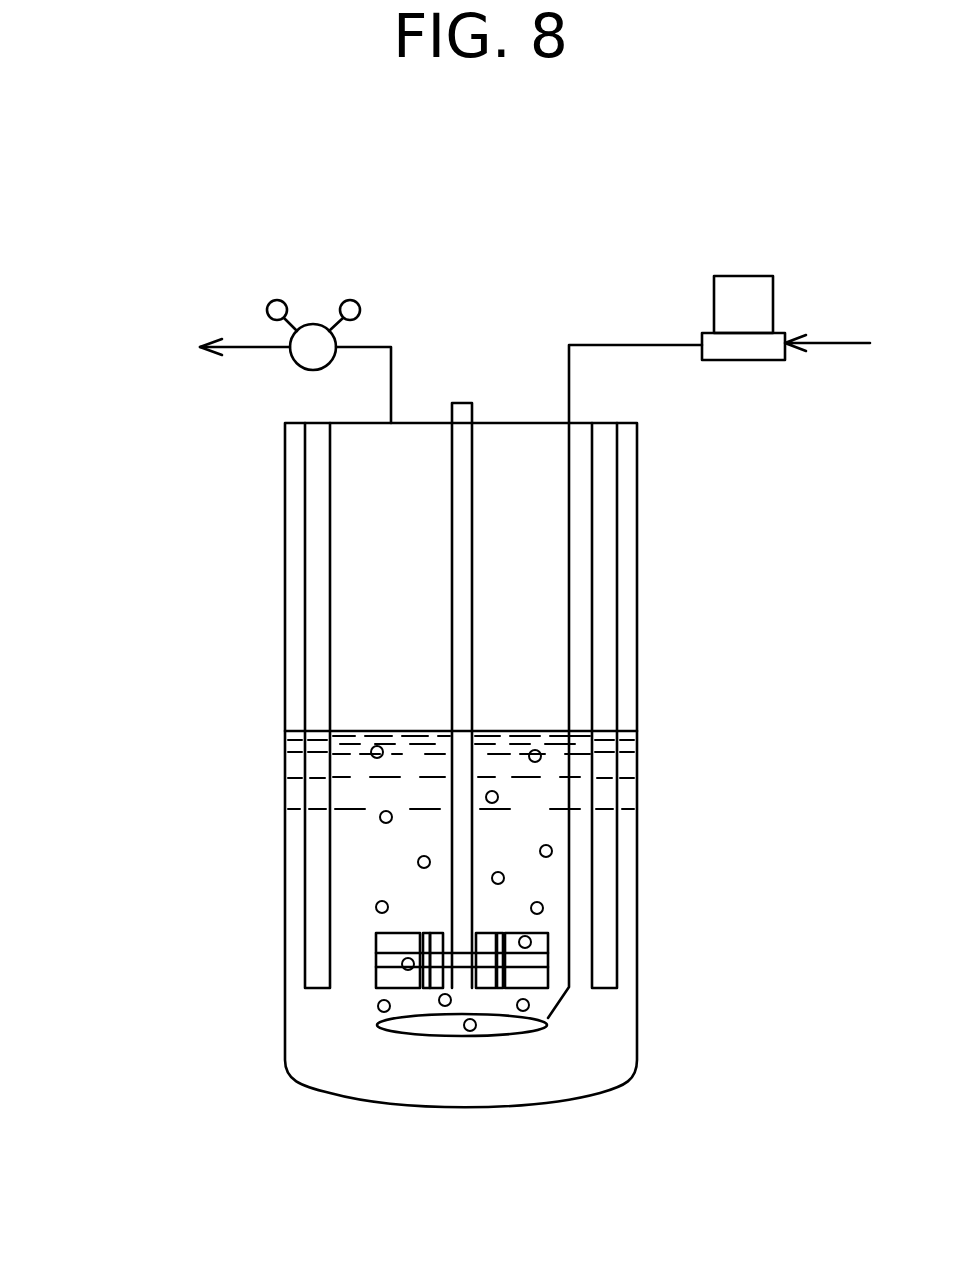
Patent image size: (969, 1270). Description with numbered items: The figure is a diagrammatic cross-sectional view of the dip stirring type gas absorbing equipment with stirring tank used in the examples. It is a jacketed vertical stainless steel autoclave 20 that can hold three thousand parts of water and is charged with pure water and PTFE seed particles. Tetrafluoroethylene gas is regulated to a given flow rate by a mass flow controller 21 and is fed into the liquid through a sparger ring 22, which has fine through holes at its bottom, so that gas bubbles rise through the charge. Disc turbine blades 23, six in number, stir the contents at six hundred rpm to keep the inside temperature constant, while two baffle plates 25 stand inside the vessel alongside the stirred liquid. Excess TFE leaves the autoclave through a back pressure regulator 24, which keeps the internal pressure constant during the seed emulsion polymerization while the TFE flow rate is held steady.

The vertical stainless steel autoclave 20 is at (212, 667).
The mass flow controller 21 is at (740, 350).
The sparger ring 22 is at (515, 1023).
The disc turbine blades 23 is at (393, 943).
The back pressure regulator 24 is at (308, 352).
The baffle plates 25 is at (318, 692).